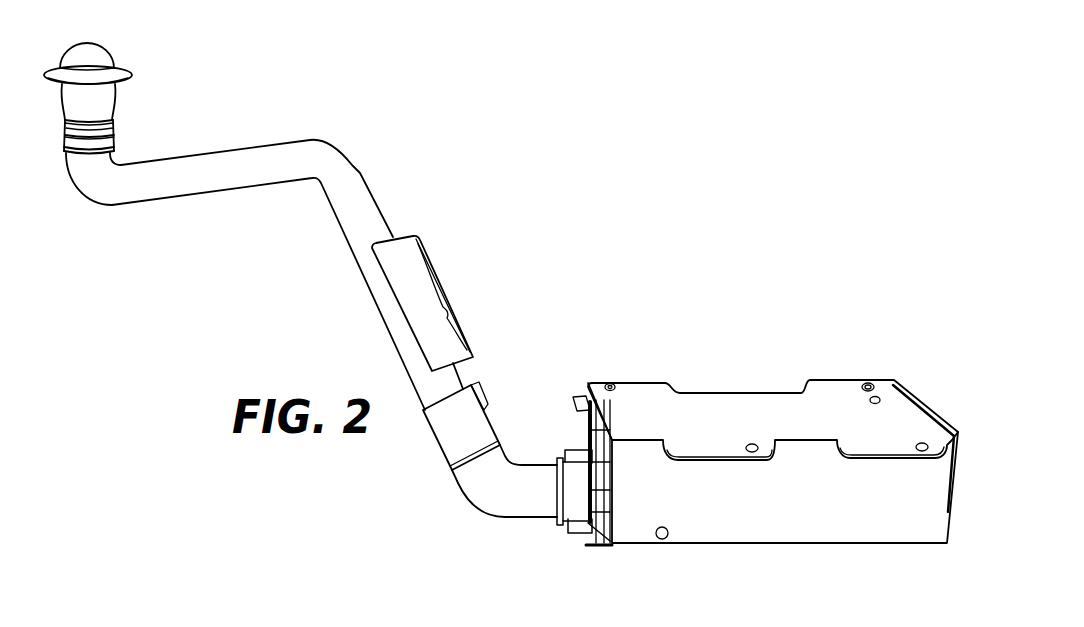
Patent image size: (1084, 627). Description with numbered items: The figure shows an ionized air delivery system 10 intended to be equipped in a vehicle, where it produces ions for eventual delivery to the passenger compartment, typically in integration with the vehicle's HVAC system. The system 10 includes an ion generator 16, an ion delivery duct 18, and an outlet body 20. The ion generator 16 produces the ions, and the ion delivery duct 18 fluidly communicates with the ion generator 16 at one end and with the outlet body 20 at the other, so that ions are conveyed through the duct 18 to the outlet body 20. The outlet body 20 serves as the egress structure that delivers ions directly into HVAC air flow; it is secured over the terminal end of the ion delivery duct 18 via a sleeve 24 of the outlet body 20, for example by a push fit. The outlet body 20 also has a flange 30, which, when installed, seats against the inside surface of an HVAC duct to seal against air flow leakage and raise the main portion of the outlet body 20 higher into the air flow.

The ionized air delivery system 10 is at (662, 297).
The ion generator 16 is at (808, 520).
The ion delivery duct 18 is at (362, 208).
The outlet body 20 is at (113, 51).
The sleeve 24 is at (114, 106).
The flange 30 is at (131, 76).